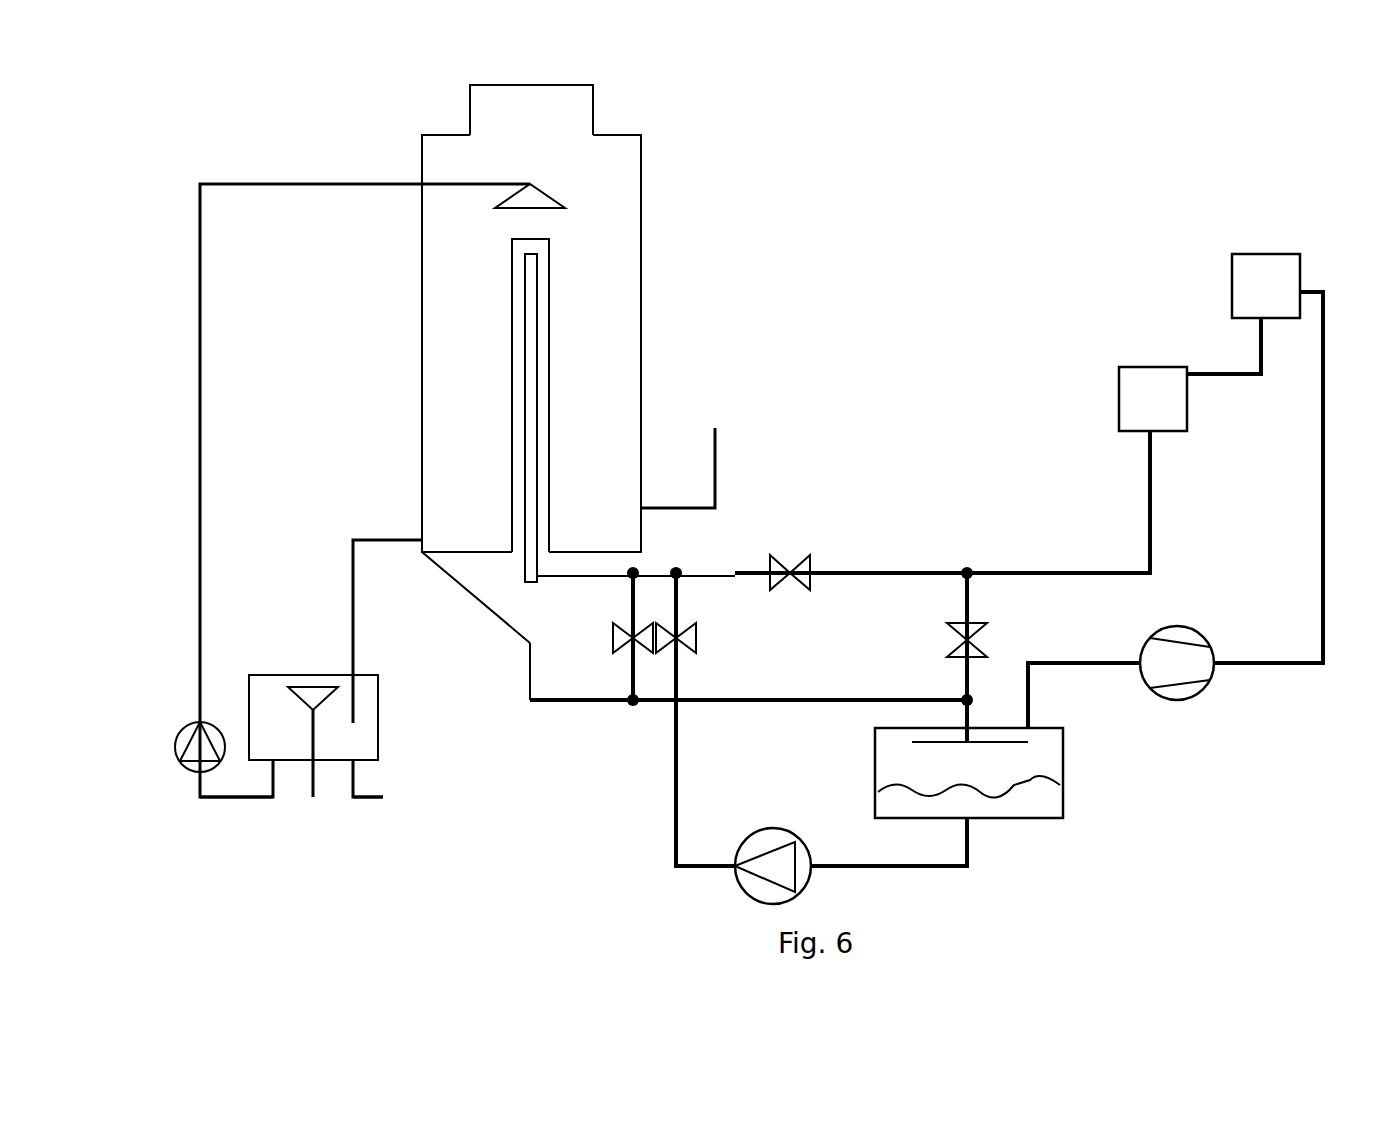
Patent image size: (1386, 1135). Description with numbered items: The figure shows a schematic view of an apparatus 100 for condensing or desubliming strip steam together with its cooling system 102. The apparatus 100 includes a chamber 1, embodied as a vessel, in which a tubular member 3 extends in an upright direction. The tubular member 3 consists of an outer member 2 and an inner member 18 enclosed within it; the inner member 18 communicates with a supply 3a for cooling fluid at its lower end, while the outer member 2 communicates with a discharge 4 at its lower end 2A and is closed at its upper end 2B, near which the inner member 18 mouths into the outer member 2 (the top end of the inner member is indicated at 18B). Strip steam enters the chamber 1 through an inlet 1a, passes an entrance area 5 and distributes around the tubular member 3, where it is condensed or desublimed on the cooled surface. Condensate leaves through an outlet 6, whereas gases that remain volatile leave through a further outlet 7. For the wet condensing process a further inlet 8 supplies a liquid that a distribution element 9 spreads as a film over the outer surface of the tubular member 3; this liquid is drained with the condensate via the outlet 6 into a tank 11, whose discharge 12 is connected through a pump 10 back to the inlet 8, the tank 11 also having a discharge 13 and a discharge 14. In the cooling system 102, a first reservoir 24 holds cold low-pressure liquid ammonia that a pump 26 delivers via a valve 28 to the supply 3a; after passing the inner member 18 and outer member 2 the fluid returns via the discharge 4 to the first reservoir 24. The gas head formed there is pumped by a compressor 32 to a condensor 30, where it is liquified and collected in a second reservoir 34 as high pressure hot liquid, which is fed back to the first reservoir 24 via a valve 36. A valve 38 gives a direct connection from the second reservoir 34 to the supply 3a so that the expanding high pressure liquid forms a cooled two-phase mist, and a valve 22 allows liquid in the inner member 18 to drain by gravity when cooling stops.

The chamber 1 is at (641, 232).
The inlet 1a is at (557, 135).
The outer member 2 is at (550, 305).
The lower end of the outer member 2A is at (520, 552).
The upper end of the outer member 2B is at (513, 238).
The tubular member 3 is at (550, 430).
The supply 3a is at (535, 640).
The discharge 4 is at (530, 645).
The entrance area 5 is at (513, 102).
The outlet 6 is at (390, 535).
The further outlet 7 is at (723, 493).
The further inlet 8 is at (352, 182).
The distribution element 9 is at (527, 186).
The pump 10 is at (178, 745).
The tank 11 is at (313, 673).
The discharge 12 is at (267, 798).
The discharge 13 is at (377, 798).
The discharge 14 is at (315, 773).
The inner member 18 is at (530, 362).
The tube top end 18B is at (552, 246).
The valve 22 is at (630, 653).
The first reservoir 24 is at (1028, 818).
The pump 26 is at (735, 866).
The valve 28 is at (675, 653).
The condensor 30 is at (1268, 253).
The compressor 32 is at (1205, 693).
The second reservoir 34 is at (1122, 397).
The valve 36 is at (972, 622).
The valve 38 is at (810, 567).
The apparatus 100 is at (809, 184).
The cooling system 102 is at (1304, 822).